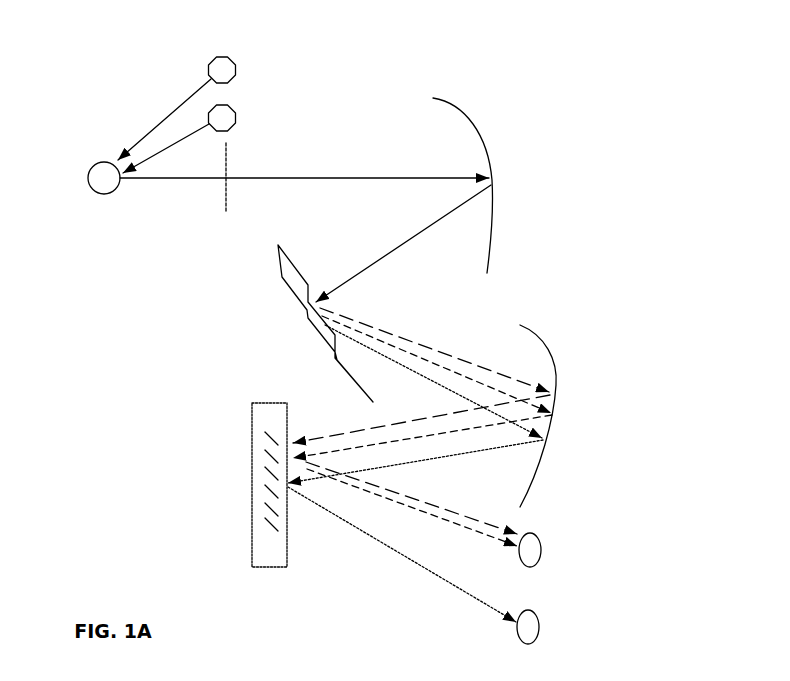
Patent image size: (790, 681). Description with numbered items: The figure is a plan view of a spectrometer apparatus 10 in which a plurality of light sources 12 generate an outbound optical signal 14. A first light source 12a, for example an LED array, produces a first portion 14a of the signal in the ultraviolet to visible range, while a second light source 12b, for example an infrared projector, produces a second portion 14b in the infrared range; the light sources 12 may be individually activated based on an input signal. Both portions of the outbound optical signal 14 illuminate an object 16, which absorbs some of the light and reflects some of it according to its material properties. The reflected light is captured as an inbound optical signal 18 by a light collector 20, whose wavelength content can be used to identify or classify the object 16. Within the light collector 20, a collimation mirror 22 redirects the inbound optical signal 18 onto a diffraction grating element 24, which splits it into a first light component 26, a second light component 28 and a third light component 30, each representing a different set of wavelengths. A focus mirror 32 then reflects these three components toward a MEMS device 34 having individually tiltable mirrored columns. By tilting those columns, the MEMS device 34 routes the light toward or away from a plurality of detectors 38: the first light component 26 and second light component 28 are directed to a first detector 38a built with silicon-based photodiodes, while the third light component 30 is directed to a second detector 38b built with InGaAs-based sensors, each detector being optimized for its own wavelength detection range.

The spectrometer apparatus 10 is at (378, 33).
The light sources 12 is at (230, 43).
The first light source 12a is at (235, 58).
The second light source 12b is at (236, 114).
The outbound optical signal 14 is at (166, 96).
The first portion of the outbound optical signal 14a is at (140, 140).
The second portion of the outbound optical signal 14b is at (163, 150).
The object 16 is at (87, 175).
The inbound optical signal 18 is at (201, 180).
The light collector 20 is at (690, 257).
The collimation mirror 22 is at (488, 152).
The diffraction grating element 24 is at (292, 289).
The first light component 26 is at (427, 348).
The second light component 28 is at (458, 366).
The third light component 30 is at (363, 345).
The focus mirror 32 is at (553, 430).
The MEMS device 34 is at (252, 507).
The detectors 38 is at (624, 567).
The first detector 38a is at (541, 557).
The second detector 38b is at (540, 622).